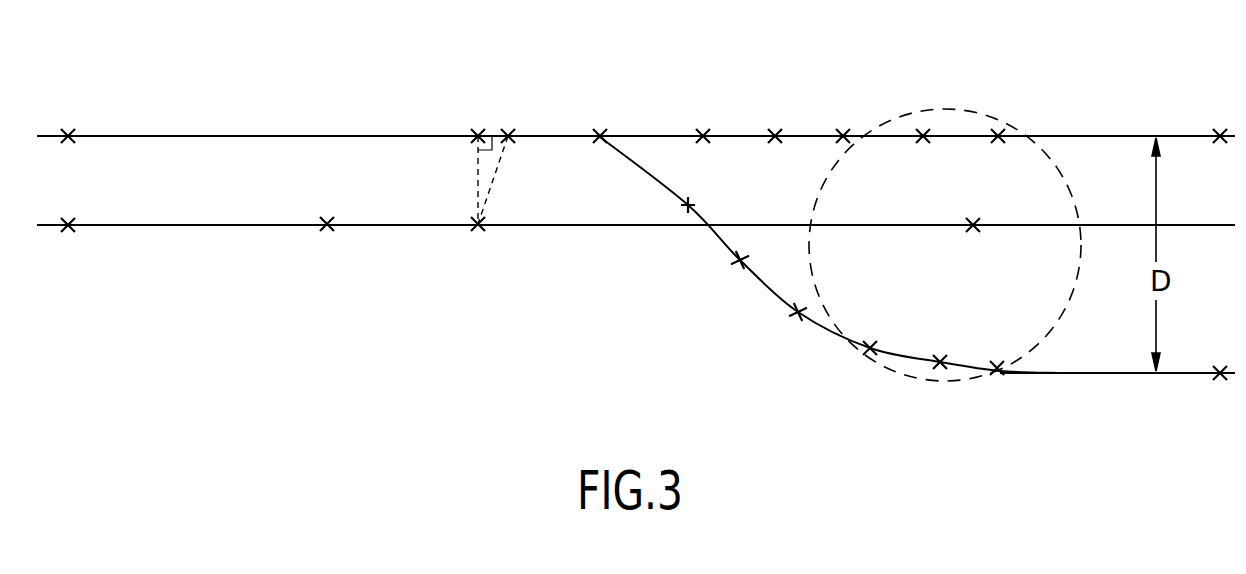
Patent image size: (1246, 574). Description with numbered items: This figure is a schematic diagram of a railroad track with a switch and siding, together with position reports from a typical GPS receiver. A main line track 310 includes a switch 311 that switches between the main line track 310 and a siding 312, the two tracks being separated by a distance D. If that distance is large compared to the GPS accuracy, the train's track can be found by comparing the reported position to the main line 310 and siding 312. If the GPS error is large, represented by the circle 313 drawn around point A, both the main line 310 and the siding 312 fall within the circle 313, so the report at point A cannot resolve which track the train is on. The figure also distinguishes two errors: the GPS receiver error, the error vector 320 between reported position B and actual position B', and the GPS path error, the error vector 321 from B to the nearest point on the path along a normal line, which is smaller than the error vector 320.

The main line track 310 is at (125, 136).
The switch 311 is at (601, 141).
The siding 312 is at (1184, 375).
The circle 313 is at (811, 263).
The error vector 320 is at (497, 180).
The error vector 321 is at (474, 140).